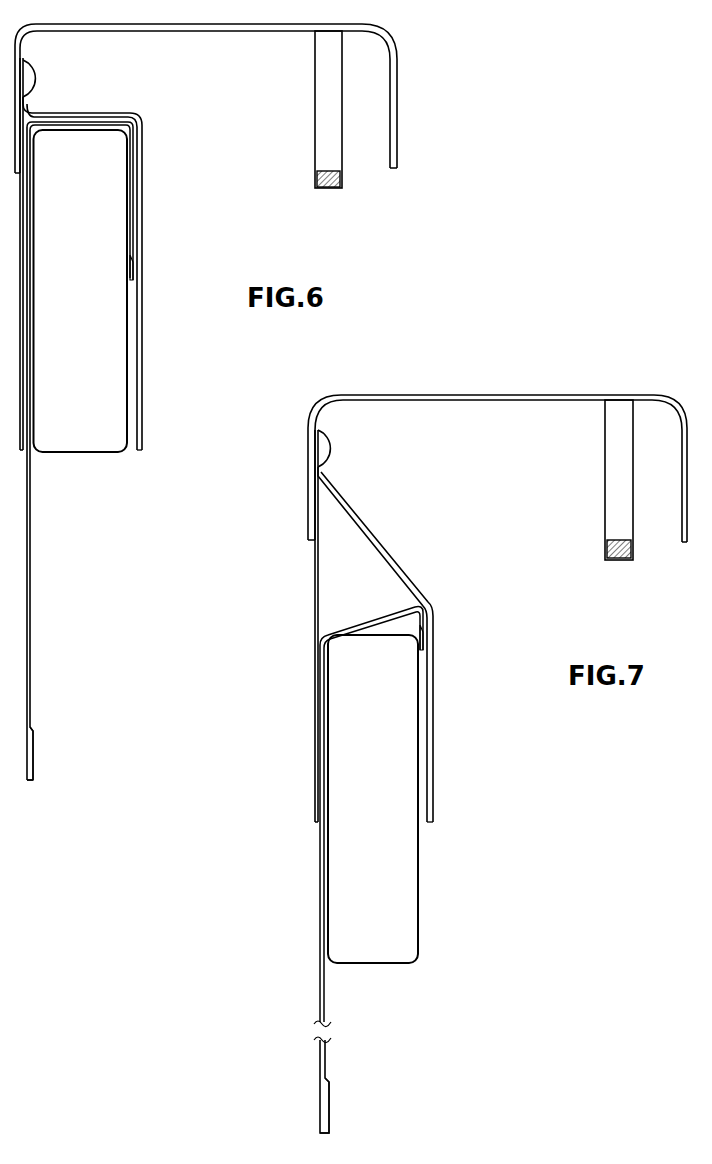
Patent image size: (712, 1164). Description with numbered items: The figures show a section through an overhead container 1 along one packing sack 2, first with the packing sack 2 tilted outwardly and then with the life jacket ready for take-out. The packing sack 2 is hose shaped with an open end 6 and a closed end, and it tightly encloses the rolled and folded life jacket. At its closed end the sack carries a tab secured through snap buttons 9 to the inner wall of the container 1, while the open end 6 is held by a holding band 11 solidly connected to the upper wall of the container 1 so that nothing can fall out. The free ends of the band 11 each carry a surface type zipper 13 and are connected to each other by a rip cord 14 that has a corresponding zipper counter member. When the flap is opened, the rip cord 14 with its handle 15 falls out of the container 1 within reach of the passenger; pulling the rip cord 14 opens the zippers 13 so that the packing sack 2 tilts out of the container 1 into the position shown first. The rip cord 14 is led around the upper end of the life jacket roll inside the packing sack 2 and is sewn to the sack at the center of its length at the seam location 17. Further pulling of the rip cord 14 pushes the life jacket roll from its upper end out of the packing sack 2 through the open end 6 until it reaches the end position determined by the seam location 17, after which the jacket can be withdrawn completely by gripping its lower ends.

In FIG. 6, the container 1 is at (412, 30).
In FIG. 7, the container 1 is at (577, 380).
In FIG. 6, the packing sack 2 is at (143, 371).
In FIG. 7, the packing sack 2 is at (435, 717).
In FIG. 6, the open end 6 is at (138, 479).
In FIG. 7, the open end 6 is at (437, 845).
In FIG. 6, the snap button 9 is at (35, 77).
In FIG. 7, the snap button 9 is at (329, 452).
In FIG. 6, the holding band 11 is at (336, 114).
In FIG. 7, the holding band 11 is at (626, 482).
In FIG. 6, the surface type zipper 13 is at (316, 173).
In FIG. 7, the surface type zipper 13 is at (605, 545).
In FIG. 6, the rip cord 14 is at (31, 582).
In FIG. 7, the rip cord 14 is at (318, 995).
In FIG. 6, the handle 15 is at (33, 752).
In FIG. 7, the handle 15 is at (330, 1098).
In FIG. 6, the seam location 17 is at (135, 258).
In FIG. 7, the seam location 17 is at (434, 630).